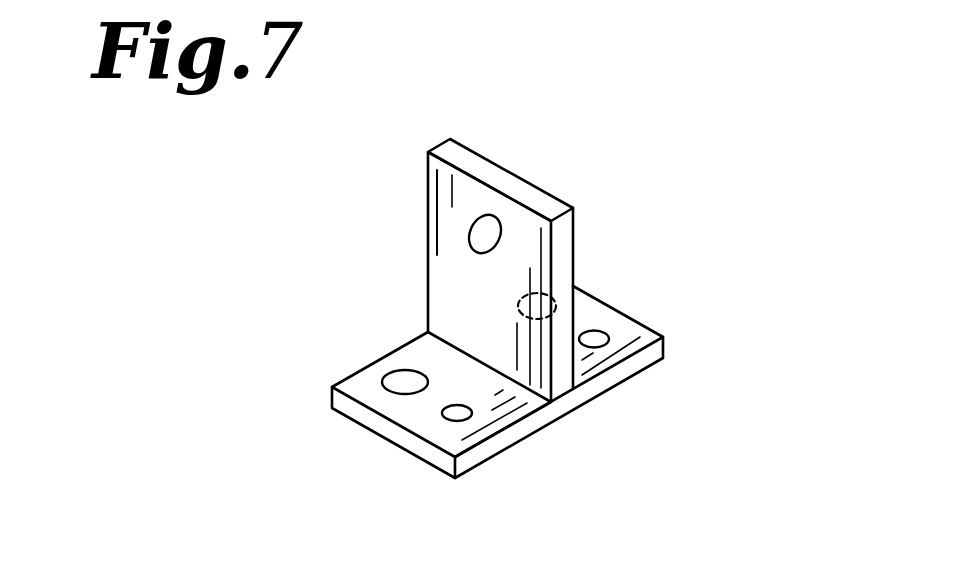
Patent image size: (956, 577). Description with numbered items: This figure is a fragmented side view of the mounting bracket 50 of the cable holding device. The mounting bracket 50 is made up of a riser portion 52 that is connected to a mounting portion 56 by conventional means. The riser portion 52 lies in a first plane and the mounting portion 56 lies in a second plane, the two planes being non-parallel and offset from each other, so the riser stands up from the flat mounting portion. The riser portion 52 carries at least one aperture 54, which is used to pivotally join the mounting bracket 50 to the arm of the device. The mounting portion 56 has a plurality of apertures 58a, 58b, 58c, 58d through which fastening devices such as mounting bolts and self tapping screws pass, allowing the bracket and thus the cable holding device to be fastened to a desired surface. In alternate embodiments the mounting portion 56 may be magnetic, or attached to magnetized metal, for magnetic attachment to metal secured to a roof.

The mounting bracket 50 is at (679, 190).
The riser portion 52 is at (503, 177).
The aperture 54 is at (482, 228).
The mounting portion 56 is at (583, 377).
The aperture 58a is at (395, 378).
The aperture 58b is at (455, 415).
The aperture 58c is at (598, 342).
The aperture 58d is at (556, 306).